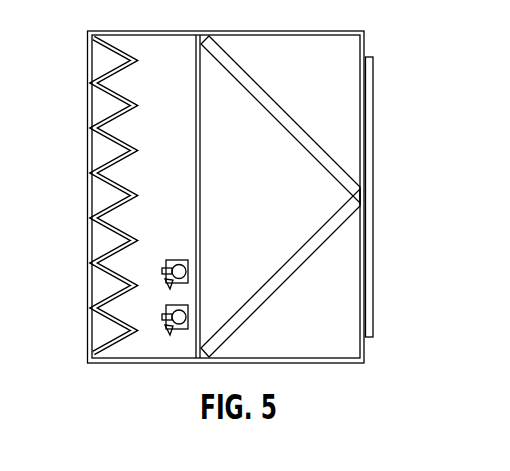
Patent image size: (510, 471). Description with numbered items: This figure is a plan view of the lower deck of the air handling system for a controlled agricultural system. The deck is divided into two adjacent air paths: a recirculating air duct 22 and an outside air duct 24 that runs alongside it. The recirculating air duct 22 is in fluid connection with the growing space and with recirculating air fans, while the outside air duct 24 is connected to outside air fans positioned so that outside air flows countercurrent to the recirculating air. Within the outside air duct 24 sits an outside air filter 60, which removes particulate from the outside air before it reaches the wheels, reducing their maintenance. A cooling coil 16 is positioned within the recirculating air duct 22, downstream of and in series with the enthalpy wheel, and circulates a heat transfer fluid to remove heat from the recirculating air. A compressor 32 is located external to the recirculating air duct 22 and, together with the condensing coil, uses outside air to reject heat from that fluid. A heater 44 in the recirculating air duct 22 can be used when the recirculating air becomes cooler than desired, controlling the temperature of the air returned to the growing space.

The cooling coil 16 is at (345, 165).
The recirculating air duct 22 is at (326, 333).
The outside air duct 24 is at (138, 136).
The compressor 32 is at (163, 272).
The heater 44 is at (373, 192).
The outside air filter 60 is at (108, 118).